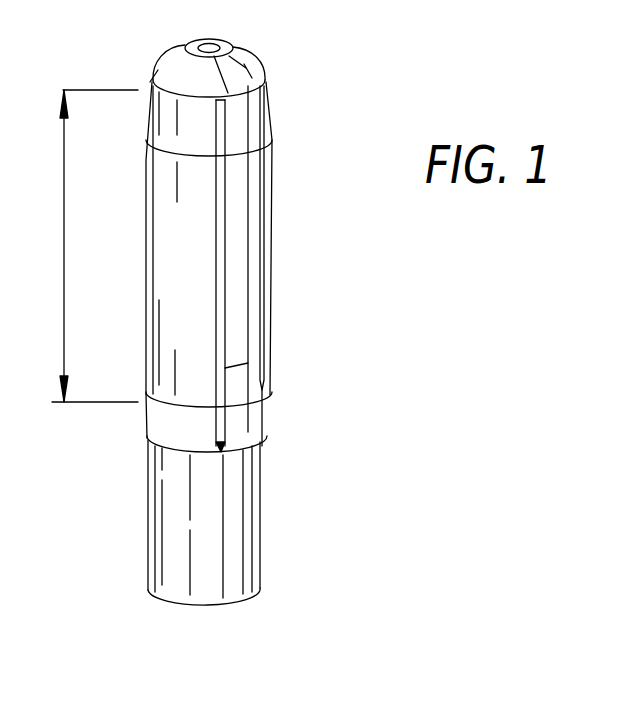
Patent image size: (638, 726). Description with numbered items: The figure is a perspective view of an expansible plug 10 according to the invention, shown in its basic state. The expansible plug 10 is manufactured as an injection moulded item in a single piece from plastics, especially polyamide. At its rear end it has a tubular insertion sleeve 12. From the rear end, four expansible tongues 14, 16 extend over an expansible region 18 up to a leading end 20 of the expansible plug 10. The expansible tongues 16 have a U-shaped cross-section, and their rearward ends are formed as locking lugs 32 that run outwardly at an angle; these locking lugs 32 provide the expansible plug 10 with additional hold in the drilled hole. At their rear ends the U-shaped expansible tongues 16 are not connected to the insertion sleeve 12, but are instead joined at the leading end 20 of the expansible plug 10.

The expansible plug 10 is at (288, 205).
The insertion sleeve 12 is at (176, 532).
The expansible tongue 14 is at (178, 264).
The expansible tongue of U-shaped cross-section 16 is at (243, 305).
The expansible region 18 is at (63, 333).
The leading end 20 is at (247, 69).
The locking lug 32 is at (243, 421).